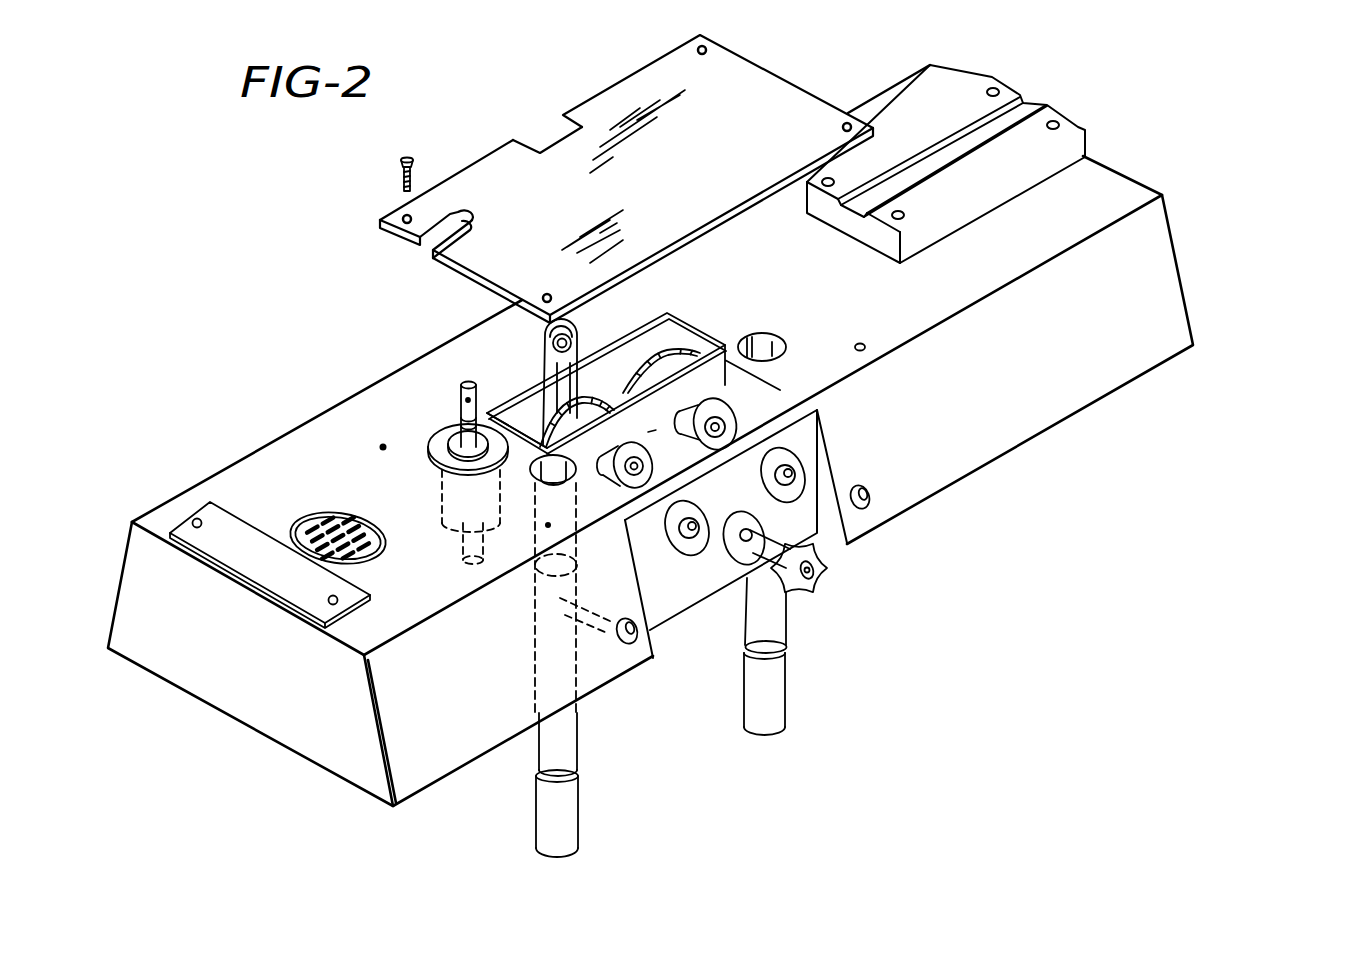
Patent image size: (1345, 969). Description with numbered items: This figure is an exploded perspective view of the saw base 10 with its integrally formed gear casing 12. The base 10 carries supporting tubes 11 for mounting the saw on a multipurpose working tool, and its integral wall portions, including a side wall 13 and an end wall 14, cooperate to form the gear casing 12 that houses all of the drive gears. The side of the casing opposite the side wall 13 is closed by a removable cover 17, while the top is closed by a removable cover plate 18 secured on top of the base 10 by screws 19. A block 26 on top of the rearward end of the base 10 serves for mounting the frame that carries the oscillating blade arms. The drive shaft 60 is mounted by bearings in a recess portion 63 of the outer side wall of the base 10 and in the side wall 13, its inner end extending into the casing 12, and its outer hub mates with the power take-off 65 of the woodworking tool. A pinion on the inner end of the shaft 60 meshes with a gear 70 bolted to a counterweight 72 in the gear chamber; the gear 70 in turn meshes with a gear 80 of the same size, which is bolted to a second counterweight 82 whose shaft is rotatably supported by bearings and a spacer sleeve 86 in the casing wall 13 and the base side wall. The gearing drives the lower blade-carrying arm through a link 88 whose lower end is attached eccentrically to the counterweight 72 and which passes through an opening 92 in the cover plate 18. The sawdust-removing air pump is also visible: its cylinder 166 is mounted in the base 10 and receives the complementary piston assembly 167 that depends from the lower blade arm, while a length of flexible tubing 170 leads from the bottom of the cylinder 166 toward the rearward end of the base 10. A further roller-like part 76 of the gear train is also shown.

The saw base 10 is at (1168, 310).
The supporting tubes 11 is at (763, 733).
The gear casing 12 is at (617, 378).
The side wall 13 is at (712, 380).
The end wall 14 is at (678, 336).
The removable cover 17 is at (523, 423).
The cover plate 18 is at (780, 110).
The screws 19 is at (417, 183).
The block 26 is at (1065, 147).
The drive shaft 60 is at (747, 582).
The recess portion 63 is at (658, 612).
The power take-off 65 is at (826, 560).
The gear 70 is at (658, 440).
The counterweight 72 is at (590, 346).
The roller 76 is at (627, 446).
The gear 80 is at (747, 339).
The second counterweight 82 is at (692, 326).
The spacer sleeve 86 is at (808, 402).
The link 88 is at (546, 343).
The opening 92 is at (545, 137).
The cylinder 166 is at (447, 450).
The piston assembly 167 is at (461, 413).
The flexible tubing 170 is at (467, 553).